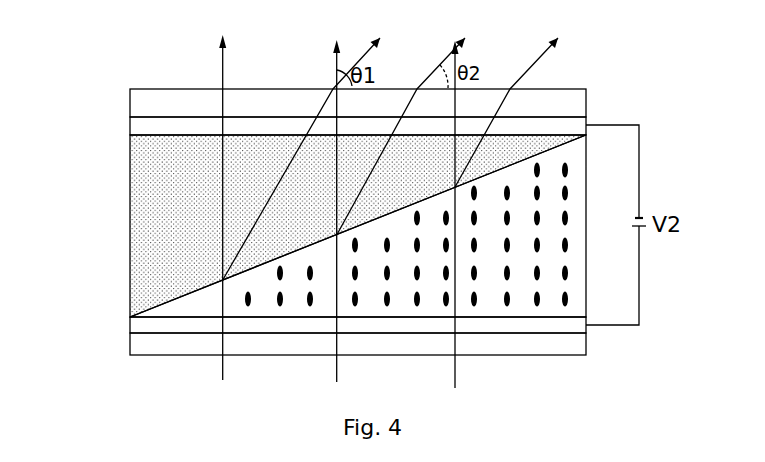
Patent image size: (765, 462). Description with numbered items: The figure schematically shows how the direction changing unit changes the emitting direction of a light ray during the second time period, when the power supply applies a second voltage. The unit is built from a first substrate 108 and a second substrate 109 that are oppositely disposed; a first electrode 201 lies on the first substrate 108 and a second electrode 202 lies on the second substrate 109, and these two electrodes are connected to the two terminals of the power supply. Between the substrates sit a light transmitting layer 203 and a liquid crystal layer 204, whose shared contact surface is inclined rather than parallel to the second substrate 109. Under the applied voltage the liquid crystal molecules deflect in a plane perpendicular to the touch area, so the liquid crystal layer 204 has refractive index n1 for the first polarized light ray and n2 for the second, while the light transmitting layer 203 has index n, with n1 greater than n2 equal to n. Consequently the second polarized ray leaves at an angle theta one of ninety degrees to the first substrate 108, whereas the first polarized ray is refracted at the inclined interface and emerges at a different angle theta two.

The first substrate 108 is at (147, 106).
The first electrode 201 is at (145, 127).
The light transmitting layer 203 is at (157, 219).
The liquid crystal layer 204 is at (578, 260).
The second electrode 202 is at (150, 326).
The second substrate 109 is at (150, 343).